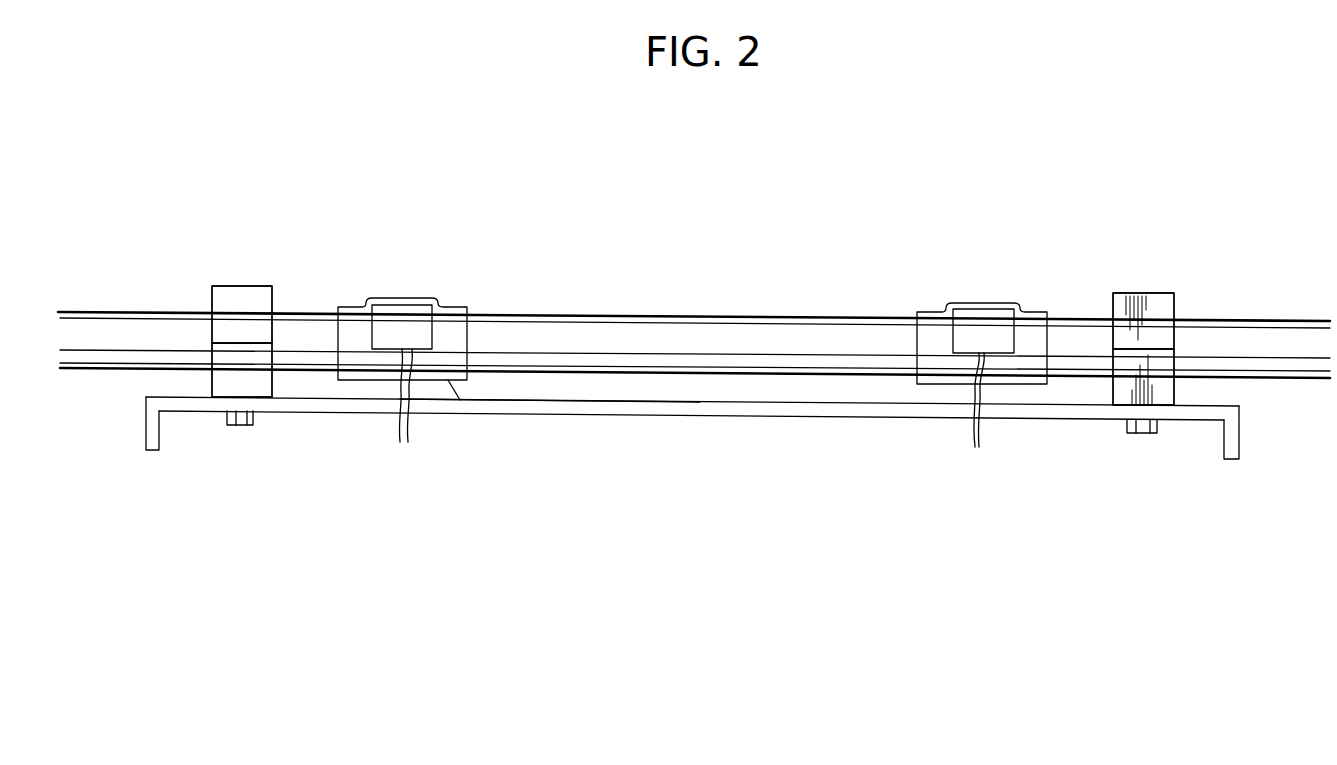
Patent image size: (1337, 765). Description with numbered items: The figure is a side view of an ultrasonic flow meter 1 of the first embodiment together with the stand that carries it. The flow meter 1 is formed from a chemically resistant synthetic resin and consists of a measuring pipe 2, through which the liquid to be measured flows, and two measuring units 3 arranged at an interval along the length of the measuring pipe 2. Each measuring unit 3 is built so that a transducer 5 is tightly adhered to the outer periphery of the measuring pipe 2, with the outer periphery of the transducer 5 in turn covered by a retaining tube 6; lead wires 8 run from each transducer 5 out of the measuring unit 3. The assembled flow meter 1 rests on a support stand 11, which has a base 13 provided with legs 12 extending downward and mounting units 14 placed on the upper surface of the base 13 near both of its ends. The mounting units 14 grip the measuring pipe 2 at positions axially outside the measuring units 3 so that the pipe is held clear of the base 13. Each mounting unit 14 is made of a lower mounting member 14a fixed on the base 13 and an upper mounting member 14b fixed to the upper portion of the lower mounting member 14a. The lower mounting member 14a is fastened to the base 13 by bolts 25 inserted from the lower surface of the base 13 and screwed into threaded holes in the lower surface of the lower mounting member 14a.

The ultrasonic flow meter 1 is at (737, 274).
The measuring pipe 2 is at (1304, 320).
The measuring unit 3 is at (439, 290).
The transducer 5 is at (403, 316).
The retaining tube 6 is at (460, 400).
The lead wires 8 is at (401, 430).
The support stand 11 is at (655, 413).
The legs 12 is at (160, 440).
The base 13 is at (556, 410).
The mounting unit 14 is at (248, 288).
The lower mounting member 14a is at (224, 385).
The upper mounting member 14b is at (228, 310).
The bolt 25 is at (252, 421).